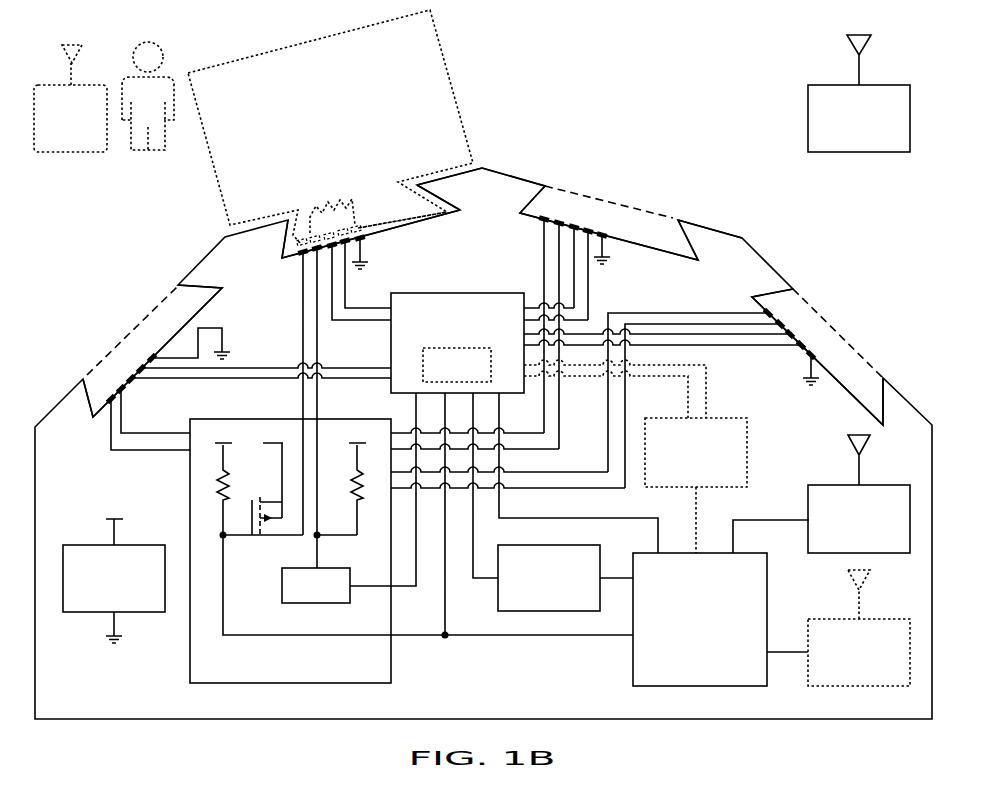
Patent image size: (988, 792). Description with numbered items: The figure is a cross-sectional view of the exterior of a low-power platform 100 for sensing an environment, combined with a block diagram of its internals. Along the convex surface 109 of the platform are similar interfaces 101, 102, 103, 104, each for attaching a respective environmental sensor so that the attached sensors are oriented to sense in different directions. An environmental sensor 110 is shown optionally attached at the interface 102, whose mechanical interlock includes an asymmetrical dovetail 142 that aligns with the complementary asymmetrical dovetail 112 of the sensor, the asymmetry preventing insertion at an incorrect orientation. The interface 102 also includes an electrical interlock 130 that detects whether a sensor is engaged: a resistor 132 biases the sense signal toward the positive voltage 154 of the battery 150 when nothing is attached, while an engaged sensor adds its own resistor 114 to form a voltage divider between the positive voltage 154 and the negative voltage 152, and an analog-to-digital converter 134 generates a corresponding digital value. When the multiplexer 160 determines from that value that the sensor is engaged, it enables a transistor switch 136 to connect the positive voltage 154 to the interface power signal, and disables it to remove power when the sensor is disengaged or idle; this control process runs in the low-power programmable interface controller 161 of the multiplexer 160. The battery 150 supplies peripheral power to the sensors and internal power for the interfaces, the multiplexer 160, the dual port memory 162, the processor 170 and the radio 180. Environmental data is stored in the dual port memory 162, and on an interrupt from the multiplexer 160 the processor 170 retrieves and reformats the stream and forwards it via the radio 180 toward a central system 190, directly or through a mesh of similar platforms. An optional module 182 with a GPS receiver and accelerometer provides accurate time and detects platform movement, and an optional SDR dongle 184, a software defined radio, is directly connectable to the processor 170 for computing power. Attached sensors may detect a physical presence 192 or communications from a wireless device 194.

The low-power platform 100 is at (69, 260).
The interface 101 is at (163, 343).
The interface 102 is at (380, 233).
The interface 103 is at (631, 231).
The interface 104 is at (857, 363).
The convex surface 109 is at (500, 173).
The environmental sensor 110 is at (293, 45).
The complementary asymmetrical dovetail 112 is at (365, 200).
The resistor 114 is at (330, 206).
The electrical interlock 130 is at (208, 419).
The resistor 132 is at (350, 488).
The analog-to-digital converter 134 is at (296, 568).
The transistor switch 136 is at (251, 500).
The asymmetrical dovetail 142 is at (445, 225).
The battery 150 is at (80, 545).
The negative voltage 152 is at (364, 264).
The positive voltage 154 is at (270, 453).
The multiplexer 160 is at (500, 293).
The low-power programmable interface controller 161 is at (465, 348).
The dual port memory 162 is at (545, 545).
The processor 170 is at (633, 654).
The radio 180 is at (826, 485).
The optional module 182 is at (664, 418).
The SDR dongle 184 is at (826, 619).
The central system 190 is at (826, 85).
The physical presence 192 is at (125, 87).
The wireless device 194 is at (52, 85).